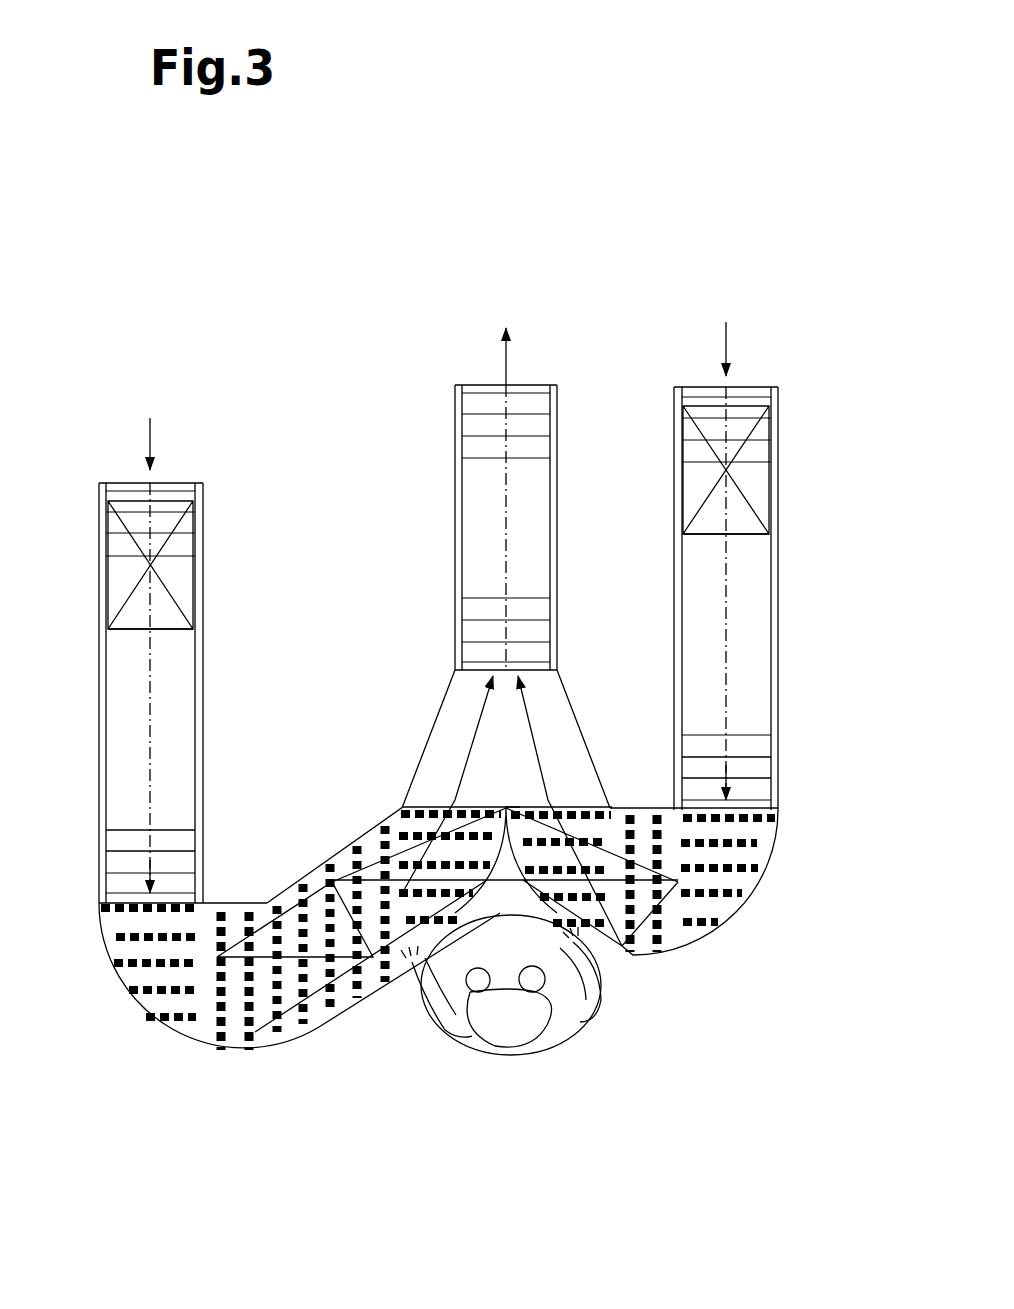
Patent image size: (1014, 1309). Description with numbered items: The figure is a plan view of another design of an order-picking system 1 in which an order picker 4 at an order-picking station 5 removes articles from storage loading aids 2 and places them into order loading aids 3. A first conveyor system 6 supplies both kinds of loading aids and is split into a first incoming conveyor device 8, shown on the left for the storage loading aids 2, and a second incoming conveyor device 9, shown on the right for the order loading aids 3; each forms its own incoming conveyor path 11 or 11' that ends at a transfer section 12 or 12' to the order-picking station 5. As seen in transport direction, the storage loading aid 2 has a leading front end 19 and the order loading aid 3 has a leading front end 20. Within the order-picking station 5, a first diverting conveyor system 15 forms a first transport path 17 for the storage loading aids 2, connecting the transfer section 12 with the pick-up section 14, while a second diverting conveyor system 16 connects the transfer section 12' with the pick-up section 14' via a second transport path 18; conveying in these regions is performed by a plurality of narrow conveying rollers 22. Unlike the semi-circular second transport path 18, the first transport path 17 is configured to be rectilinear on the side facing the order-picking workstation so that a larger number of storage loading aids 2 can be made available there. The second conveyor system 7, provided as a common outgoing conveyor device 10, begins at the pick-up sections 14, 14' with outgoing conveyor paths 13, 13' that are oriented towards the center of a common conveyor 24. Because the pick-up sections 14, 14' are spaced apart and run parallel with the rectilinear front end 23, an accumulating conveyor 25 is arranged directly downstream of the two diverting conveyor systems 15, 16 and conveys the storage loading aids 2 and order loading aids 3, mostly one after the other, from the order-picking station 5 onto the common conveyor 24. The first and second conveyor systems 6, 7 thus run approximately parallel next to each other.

The order-picking system 1 is at (678, 140).
The storage loading aid 2 is at (180, 573).
The order loading aid 3 is at (733, 460).
The order picker 4 is at (537, 1033).
The order-picking station 5 is at (712, 1042).
The first conveyor system 6 is at (676, 345).
The second conveyor system 7 is at (475, 358).
The first incoming conveyor device 8 is at (184, 468).
The second incoming conveyor device 9 is at (745, 333).
The common outgoing conveyor device 10 is at (525, 378).
The incoming conveyor path 11 is at (116, 787).
The incoming conveyor path 11' is at (765, 726).
The transfer section 12 is at (195, 825).
The transfer section 12' is at (712, 743).
The outgoing conveyor path 13 is at (435, 744).
The outgoing conveyor path 13' is at (578, 783).
The pick-up section 14 is at (393, 806).
The pick-up section 14' is at (592, 780).
The first diverting conveyor system 15 is at (130, 1018).
The second diverting conveyor system 16 is at (742, 927).
The first transport path 17 is at (233, 997).
The second transport path 18 is at (677, 900).
The front end 19 is at (163, 630).
The front end 20 is at (717, 535).
The conveying rollers 22 is at (248, 1042).
The front end 23 is at (662, 807).
The common conveyor 24 is at (540, 468).
The accumulating conveyor 25 is at (570, 660).